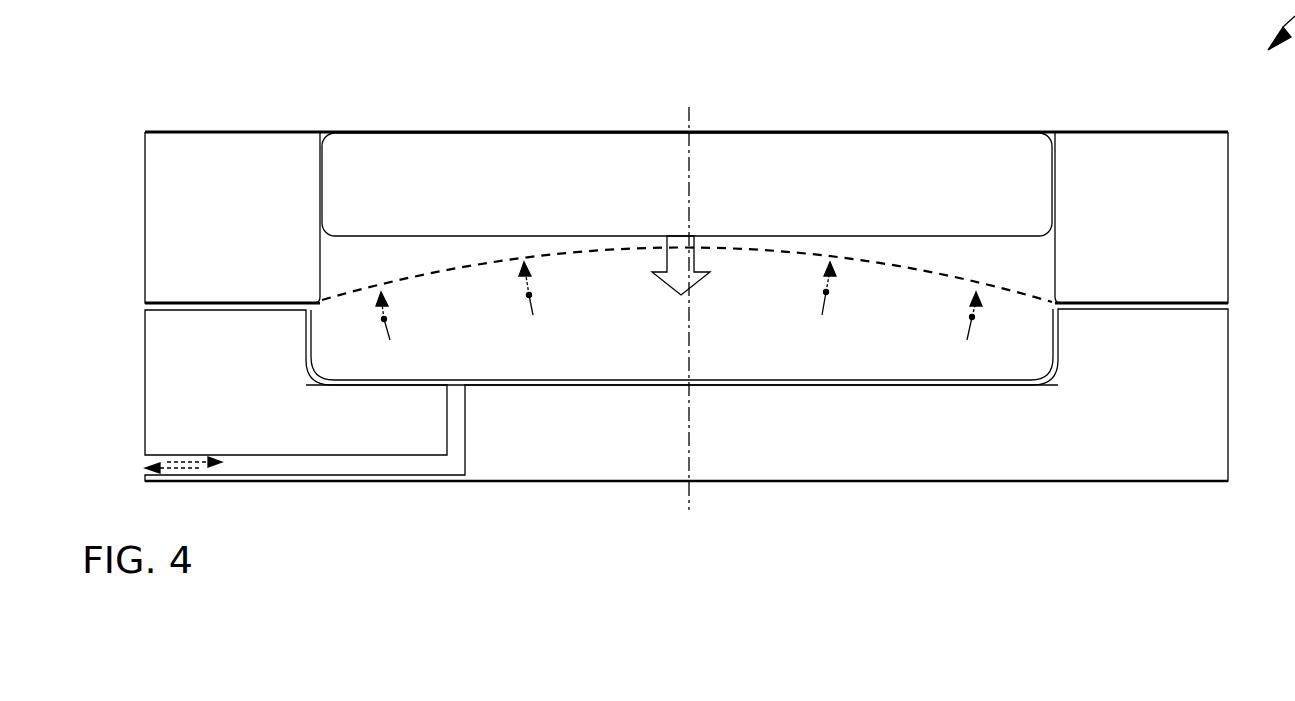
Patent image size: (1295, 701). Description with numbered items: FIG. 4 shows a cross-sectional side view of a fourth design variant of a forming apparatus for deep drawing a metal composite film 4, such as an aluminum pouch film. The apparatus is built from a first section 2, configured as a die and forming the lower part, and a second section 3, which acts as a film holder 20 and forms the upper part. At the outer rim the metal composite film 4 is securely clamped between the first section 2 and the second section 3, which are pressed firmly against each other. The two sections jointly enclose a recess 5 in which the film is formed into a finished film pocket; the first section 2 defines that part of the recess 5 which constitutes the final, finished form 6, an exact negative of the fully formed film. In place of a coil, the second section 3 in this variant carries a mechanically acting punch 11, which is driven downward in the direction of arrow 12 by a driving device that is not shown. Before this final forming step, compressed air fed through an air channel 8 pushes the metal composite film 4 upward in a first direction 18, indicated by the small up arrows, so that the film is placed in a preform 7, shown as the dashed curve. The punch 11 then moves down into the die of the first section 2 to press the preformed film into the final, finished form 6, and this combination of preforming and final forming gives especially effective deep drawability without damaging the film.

The first section 2 is at (1203, 417).
The second section 3 is at (1203, 208).
The metal composite film 4 is at (1203, 303).
The recess 5 is at (570, 358).
The final, finished form 6 is at (503, 378).
The preform 7 is at (759, 250).
The air channel 8 is at (347, 464).
The punch 11 is at (897, 187).
The arrow 12 is at (680, 248).
The first direction 18 is at (384, 319).
The film holder 20 is at (1169, 148).